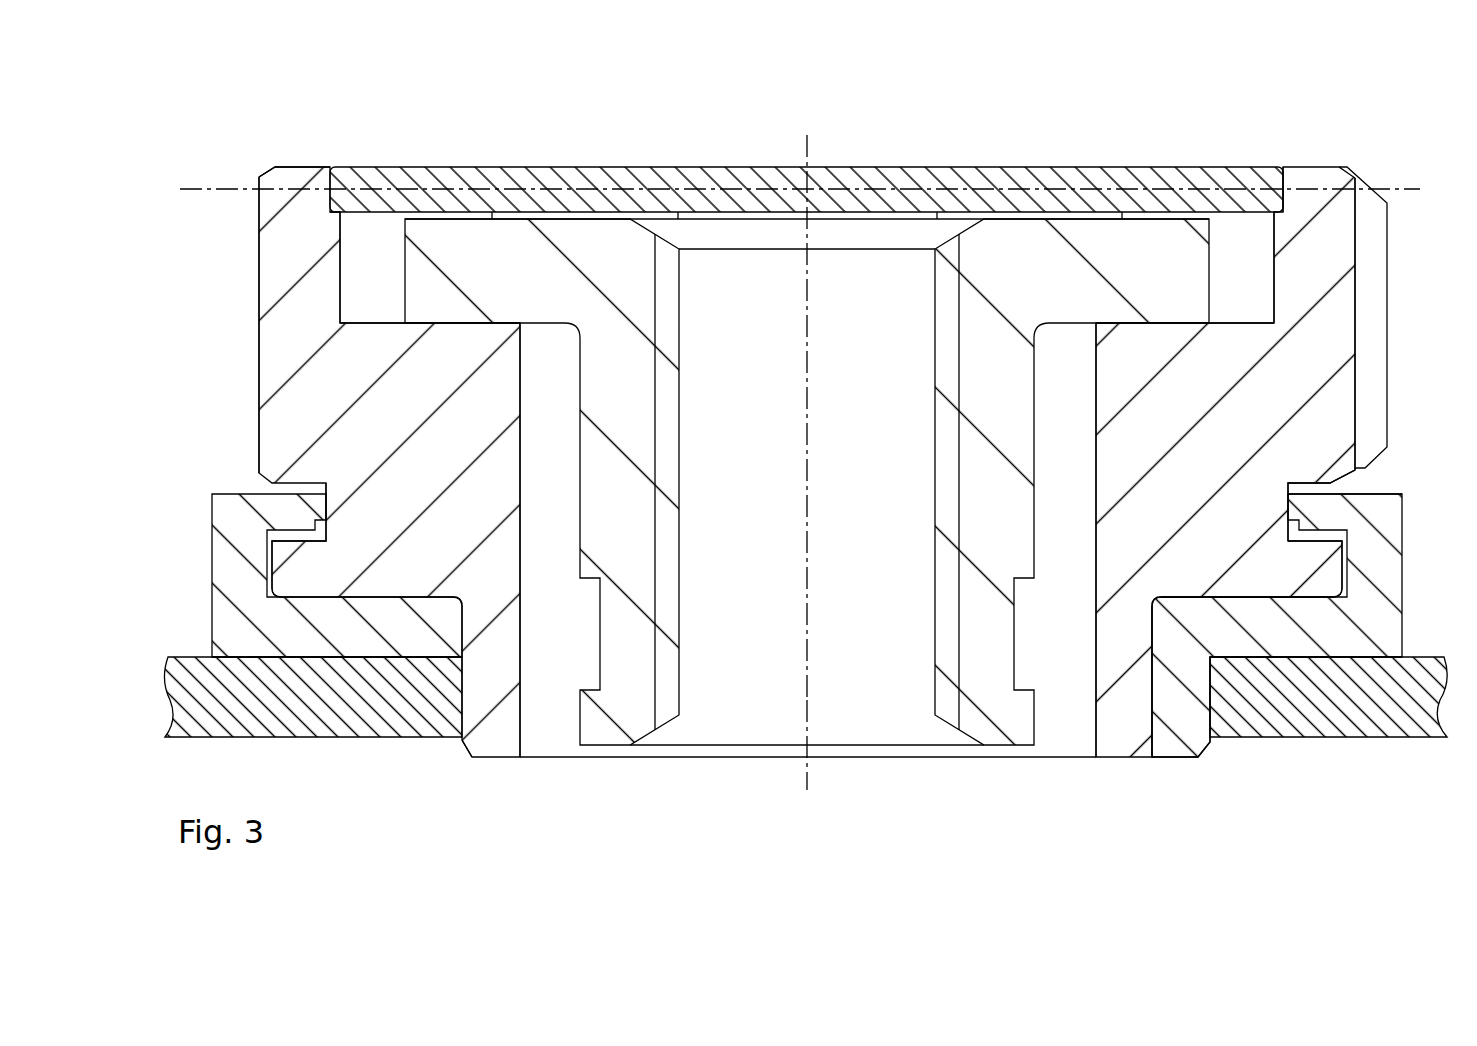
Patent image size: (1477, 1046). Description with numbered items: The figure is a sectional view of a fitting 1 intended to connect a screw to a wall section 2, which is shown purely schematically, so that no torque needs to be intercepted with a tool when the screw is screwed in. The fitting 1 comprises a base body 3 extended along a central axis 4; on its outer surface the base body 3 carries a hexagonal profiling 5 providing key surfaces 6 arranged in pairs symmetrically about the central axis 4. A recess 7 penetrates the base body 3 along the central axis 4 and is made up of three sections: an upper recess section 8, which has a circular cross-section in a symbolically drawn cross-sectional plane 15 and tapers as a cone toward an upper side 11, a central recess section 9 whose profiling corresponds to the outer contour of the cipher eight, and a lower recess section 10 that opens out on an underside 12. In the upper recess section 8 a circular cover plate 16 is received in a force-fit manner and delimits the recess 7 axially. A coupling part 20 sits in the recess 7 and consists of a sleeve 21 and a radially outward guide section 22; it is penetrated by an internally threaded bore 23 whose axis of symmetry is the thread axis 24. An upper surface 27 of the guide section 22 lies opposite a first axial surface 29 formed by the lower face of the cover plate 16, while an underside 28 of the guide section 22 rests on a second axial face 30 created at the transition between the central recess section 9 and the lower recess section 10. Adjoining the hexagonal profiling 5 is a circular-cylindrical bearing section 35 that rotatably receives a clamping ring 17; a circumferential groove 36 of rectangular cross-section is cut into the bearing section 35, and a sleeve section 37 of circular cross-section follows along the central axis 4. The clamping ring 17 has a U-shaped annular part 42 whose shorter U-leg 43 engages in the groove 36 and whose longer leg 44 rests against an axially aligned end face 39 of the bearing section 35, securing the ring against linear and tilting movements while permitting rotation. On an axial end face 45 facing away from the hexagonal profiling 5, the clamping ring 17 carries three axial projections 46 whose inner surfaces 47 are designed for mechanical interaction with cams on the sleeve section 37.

The fitting 1 is at (228, 128).
The wall section 2 is at (1393, 727).
The base body 3 is at (292, 415).
The central axis 4 is at (810, 150).
The hexagonal profiling 5 is at (1372, 283).
The key surfaces 6 is at (1371, 331).
The recess 7 is at (552, 740).
The first recess section 8 is at (1283, 178).
The central recess section 9 is at (1275, 283).
The lower recess section 10 is at (512, 653).
The upper side 11 is at (300, 163).
The underside 12 is at (483, 762).
The cross-sectional plane 15 is at (212, 183).
The cover plate 16 is at (455, 177).
The clamping ring 17 is at (230, 512).
The coupling part 20 is at (609, 244).
The sleeve 21 is at (633, 498).
The guide section 22 is at (1147, 265).
The internally threaded bore 23 is at (953, 627).
The thread axis 24 is at (812, 790).
The upper surface 27 is at (1063, 215).
The underside 28 is at (1178, 335).
The first axial surface 29 is at (370, 215).
The second axial face 30 is at (368, 320).
The bearing section 35 is at (325, 566).
The circumferential groove 36 is at (1288, 507).
The sleeve section 37 is at (1117, 643).
The end face 39 is at (1260, 605).
The annular part 42 is at (1380, 565).
The shorter U-leg 43 is at (1337, 515).
The longer leg 44 is at (1220, 635).
The axial end face 45 is at (270, 660).
The axial projections 46 is at (1173, 723).
The inner surfaces 47 is at (1135, 700).